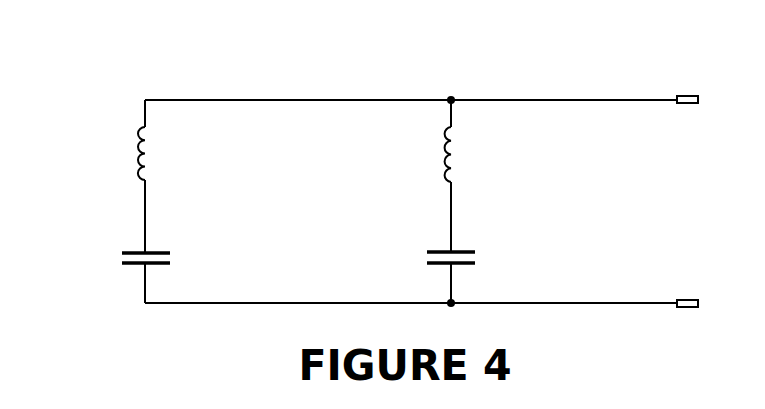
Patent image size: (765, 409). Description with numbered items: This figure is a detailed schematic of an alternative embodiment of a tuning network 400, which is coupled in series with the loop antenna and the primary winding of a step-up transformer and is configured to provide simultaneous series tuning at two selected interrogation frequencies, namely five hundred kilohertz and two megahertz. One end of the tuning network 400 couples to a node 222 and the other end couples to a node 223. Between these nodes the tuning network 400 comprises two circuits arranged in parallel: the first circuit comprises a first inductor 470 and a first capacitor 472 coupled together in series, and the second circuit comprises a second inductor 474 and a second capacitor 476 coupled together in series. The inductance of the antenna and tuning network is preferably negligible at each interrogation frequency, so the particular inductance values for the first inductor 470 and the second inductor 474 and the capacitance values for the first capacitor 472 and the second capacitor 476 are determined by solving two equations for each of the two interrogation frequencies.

The tuning network 400 is at (68, 62).
The inductor L1 470 is at (152, 141).
The capacitor C1 472 is at (172, 257).
The inductor L2 474 is at (455, 141).
The capacitor C2 476 is at (478, 257).
The node 222 is at (688, 95).
The node 223 is at (688, 299).